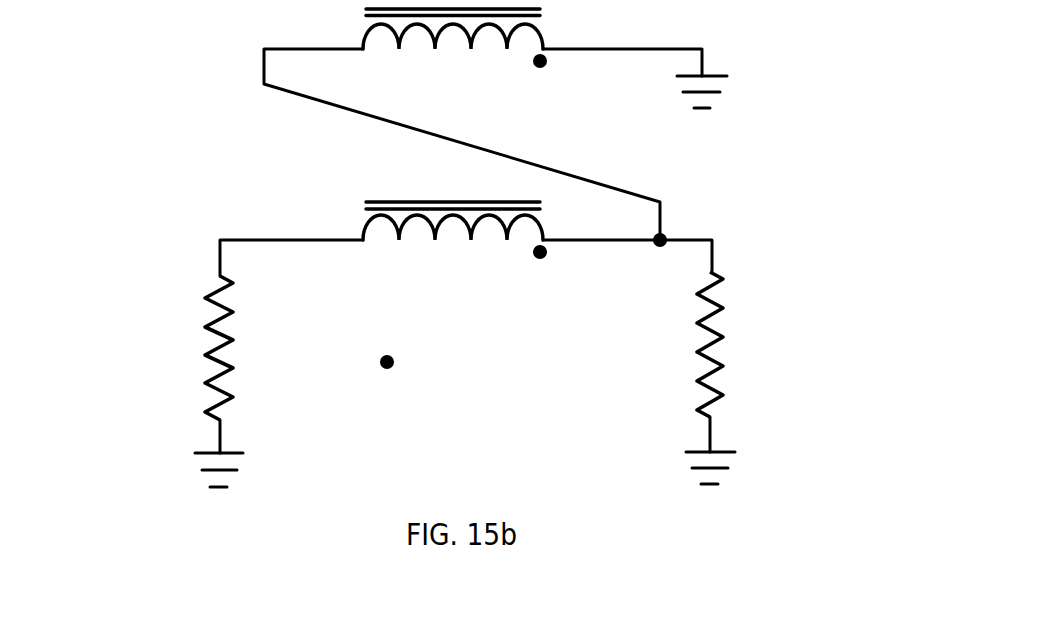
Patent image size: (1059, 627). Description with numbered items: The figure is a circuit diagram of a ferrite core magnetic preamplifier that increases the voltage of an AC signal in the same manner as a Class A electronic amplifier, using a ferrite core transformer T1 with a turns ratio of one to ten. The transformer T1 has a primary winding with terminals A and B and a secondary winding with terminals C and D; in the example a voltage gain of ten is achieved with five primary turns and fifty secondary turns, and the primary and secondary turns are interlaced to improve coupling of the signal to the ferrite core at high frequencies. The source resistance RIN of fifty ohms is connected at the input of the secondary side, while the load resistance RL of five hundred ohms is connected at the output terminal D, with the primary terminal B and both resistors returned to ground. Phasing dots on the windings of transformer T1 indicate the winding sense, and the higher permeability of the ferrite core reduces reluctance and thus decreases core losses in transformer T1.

The transformer 1:10 T1 is at (455, 192).
The primary winding terminal A is at (333, 30).
The primary winding terminal B is at (570, 30).
The secondary winding terminal C is at (330, 222).
The secondary winding terminal D is at (566, 222).
The input resistor 50 ohm RIN is at (154, 348).
The load resistor 500 ohm RL is at (778, 344).